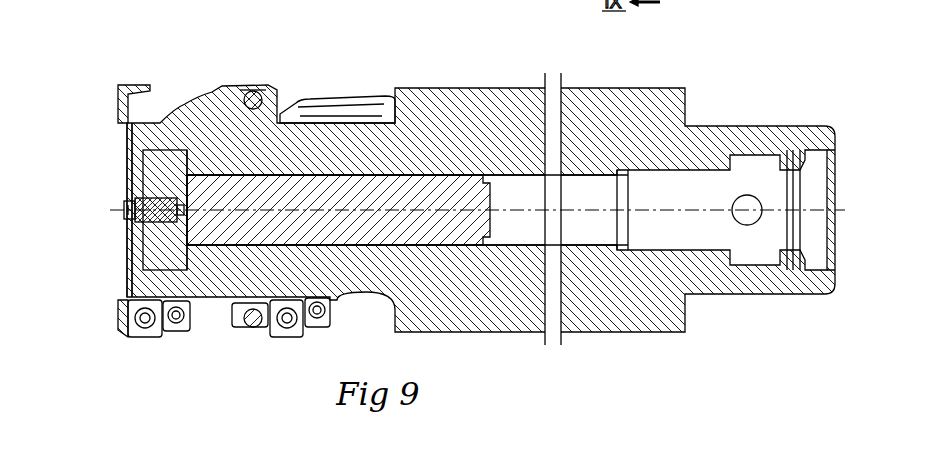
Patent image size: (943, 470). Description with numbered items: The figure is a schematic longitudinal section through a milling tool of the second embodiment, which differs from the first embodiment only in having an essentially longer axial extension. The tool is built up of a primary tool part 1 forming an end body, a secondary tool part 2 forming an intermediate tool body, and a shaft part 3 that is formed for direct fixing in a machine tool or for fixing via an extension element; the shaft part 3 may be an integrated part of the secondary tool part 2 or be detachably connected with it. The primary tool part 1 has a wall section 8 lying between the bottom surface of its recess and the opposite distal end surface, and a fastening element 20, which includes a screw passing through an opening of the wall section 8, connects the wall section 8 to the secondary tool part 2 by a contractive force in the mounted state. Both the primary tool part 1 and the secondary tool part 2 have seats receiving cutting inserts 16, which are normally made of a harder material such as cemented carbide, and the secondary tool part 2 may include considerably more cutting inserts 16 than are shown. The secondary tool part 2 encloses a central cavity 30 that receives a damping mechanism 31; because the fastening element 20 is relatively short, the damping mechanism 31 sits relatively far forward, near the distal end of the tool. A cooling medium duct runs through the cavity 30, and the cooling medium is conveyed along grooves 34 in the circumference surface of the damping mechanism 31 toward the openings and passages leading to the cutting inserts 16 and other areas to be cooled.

The primary tool part 1 is at (152, 78).
The secondary tool part 2 is at (411, 78).
The shaft part 3 is at (752, 136).
The wall section 8 is at (136, 176).
The cutting insert 16 is at (150, 340).
The fastening element 20 is at (128, 223).
The central cavity 30 is at (506, 200).
The damping mechanism 31 is at (425, 195).
The helically shaped groove 34 is at (245, 178).